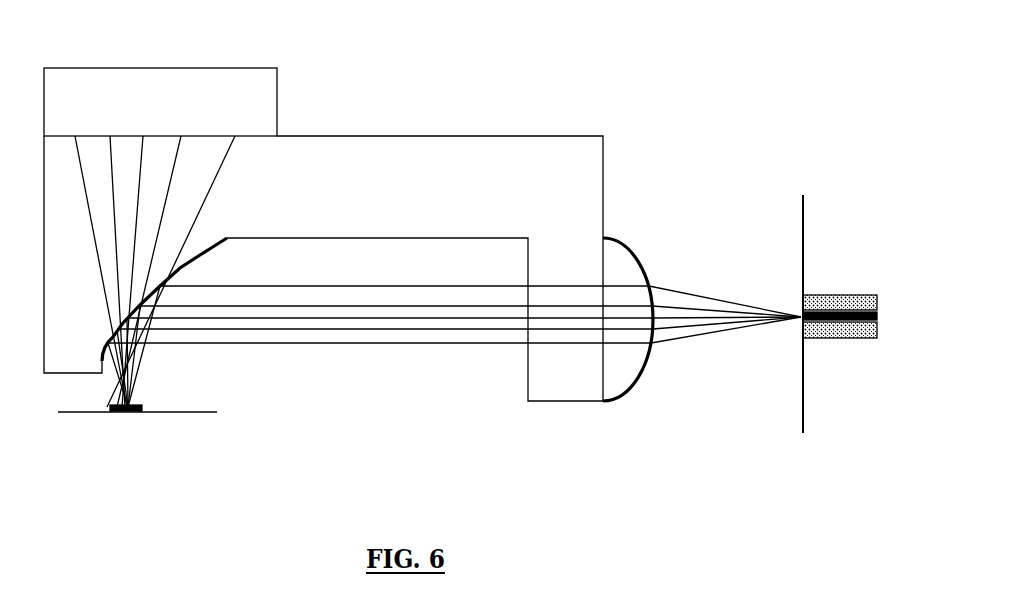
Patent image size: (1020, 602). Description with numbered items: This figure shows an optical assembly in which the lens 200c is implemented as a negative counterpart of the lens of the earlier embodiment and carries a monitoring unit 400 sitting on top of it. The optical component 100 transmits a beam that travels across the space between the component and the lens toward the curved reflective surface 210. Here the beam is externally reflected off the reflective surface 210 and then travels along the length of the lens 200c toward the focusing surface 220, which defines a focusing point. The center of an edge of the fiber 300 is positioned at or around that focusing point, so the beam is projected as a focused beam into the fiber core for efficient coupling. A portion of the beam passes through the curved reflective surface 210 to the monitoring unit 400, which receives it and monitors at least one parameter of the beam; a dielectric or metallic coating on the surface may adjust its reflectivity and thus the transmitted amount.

The monitoring unit 400 is at (160, 210).
The lens 200c is at (323, 238).
The curved reflective surface 210 is at (377, 301).
The focusing surface 220 is at (702, 294).
The fiber 300 is at (864, 314).
The optical component 100 is at (159, 435).